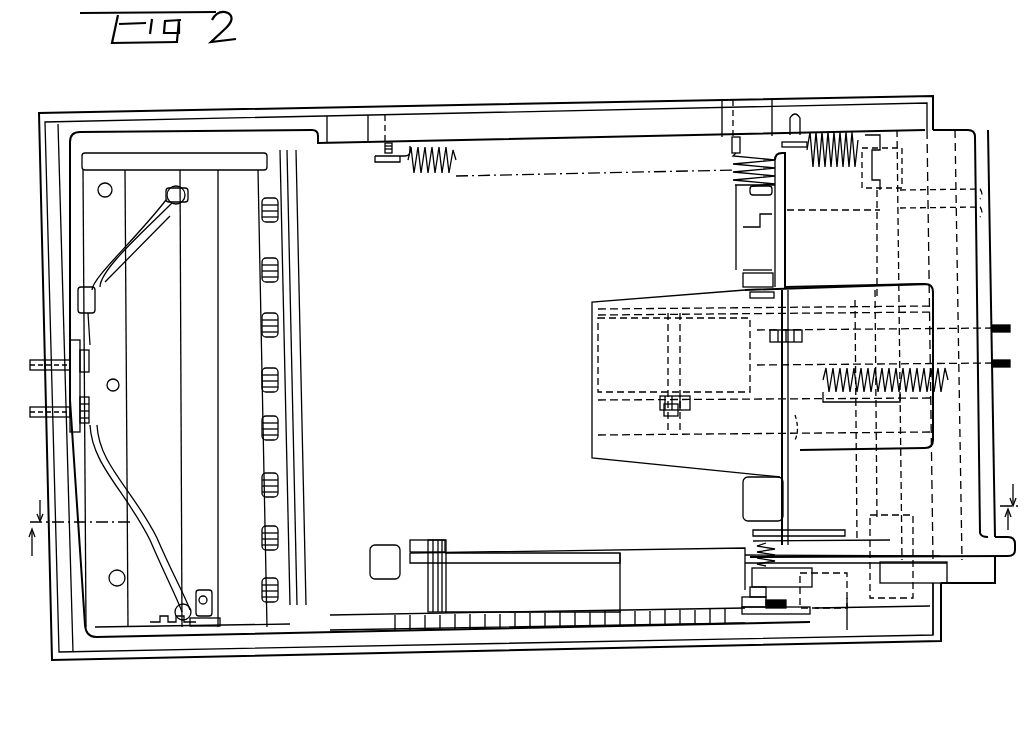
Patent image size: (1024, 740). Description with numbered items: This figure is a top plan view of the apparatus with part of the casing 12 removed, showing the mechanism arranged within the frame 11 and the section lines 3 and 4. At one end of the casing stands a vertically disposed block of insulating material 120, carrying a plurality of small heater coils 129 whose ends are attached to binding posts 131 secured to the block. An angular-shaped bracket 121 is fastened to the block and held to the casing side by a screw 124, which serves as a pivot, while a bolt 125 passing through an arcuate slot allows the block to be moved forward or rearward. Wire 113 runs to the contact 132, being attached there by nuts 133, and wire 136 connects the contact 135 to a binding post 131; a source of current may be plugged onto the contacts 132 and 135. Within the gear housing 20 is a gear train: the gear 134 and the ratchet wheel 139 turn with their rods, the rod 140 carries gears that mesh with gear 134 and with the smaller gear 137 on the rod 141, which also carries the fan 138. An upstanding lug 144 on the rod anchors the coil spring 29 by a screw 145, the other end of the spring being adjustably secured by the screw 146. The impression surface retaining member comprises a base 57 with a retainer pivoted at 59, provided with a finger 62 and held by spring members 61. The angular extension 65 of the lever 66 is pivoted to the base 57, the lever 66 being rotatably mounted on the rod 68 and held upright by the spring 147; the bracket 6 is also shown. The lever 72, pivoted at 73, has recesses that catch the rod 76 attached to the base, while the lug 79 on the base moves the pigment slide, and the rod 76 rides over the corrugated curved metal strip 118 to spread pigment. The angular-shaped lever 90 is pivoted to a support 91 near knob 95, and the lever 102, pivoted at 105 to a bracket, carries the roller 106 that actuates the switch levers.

The frame 12 is at (608, 110).
The smaller gear 137 is at (285, 190).
The binding post 131 is at (180, 205).
The heater coil 129 is at (288, 222).
The wire 136 is at (135, 265).
The wire 113 is at (278, 280).
The contact 135 is at (40, 358).
The block of insulating material 120 is at (186, 415).
The nuts 133 is at (90, 408).
The contact 132 is at (38, 418).
The section line 4 is at (524, 494).
The section line 3 is at (522, 540).
The bolt 125 is at (200, 590).
The screw 124 is at (158, 622).
The angular-shaped bracket 121 is at (212, 616).
The screw 146 is at (393, 164).
The coil spring 29 is at (428, 175).
The screw 145 is at (868, 142).
The upstanding lug 144 is at (862, 182).
The pivot 59 is at (738, 168).
The spring 147 is at (750, 191).
The lever 66 is at (743, 226).
The stop 6 is at (750, 295).
The pivot 105 is at (872, 236).
The rod 68 is at (962, 255).
The finger 62 is at (1000, 560).
The base 57 is at (948, 585).
The angular extension 65 is at (858, 292).
The gear housing 20 is at (653, 464).
The rod 140 is at (798, 432).
The fan 138 is at (604, 351).
The gear 134 is at (858, 330).
The ratchet wheel 139 is at (860, 398).
The rod 141 is at (675, 421).
The knob 95 is at (398, 545).
The angular-shaped lever 90 is at (484, 555).
The support 91 is at (450, 577).
The curved metal strip 118 is at (512, 620).
The lever 72 is at (668, 612).
The spring members 61 is at (753, 533).
The lug 79 is at (798, 578).
The rod 76 is at (750, 588).
The pivot 73 is at (742, 600).
The lever 102 is at (868, 603).
The roller 106 is at (850, 632).
The base plate 11 is at (900, 638).